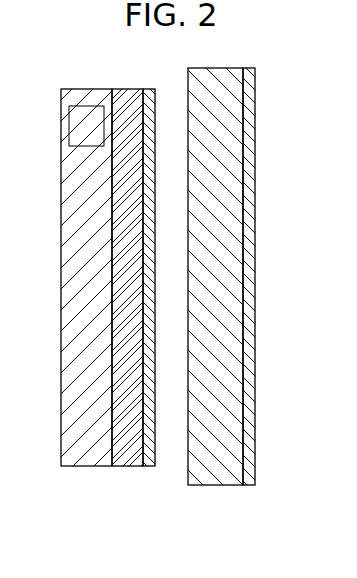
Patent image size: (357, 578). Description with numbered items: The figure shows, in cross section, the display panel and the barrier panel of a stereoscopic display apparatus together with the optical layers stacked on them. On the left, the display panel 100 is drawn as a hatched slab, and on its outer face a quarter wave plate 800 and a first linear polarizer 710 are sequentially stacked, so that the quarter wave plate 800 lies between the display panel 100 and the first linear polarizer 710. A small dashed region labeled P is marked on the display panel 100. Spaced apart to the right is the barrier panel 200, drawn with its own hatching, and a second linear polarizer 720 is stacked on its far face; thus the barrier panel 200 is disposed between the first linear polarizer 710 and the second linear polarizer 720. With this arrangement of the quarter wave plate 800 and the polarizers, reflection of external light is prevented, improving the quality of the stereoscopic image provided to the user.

The display panel 100 is at (86, 452).
The quarter wave plate 800 is at (128, 452).
The first linear polarizer 710 is at (150, 456).
The barrier panel 200 is at (218, 472).
The second linear polarizer 720 is at (248, 484).
The pixel region P is at (83, 106).